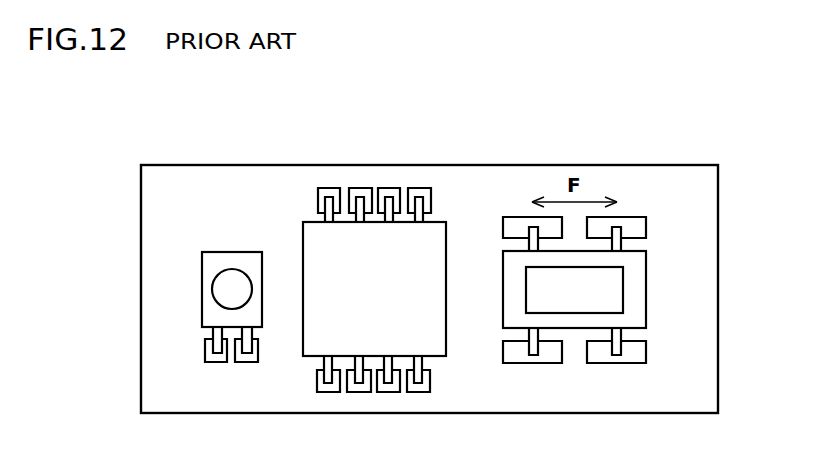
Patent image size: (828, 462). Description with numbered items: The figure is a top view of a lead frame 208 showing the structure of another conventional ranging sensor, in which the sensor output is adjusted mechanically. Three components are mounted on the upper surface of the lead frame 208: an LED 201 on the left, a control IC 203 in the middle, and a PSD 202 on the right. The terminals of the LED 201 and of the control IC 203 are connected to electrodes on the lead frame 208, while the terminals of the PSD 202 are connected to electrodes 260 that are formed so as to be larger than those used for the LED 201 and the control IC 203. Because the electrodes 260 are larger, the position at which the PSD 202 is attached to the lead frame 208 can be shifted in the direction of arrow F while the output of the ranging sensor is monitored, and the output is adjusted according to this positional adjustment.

The lead frame 208 is at (172, 211).
The LED 201 is at (232, 289).
The control IC 203 is at (327, 250).
The PSD 202 is at (633, 290).
The electrodes 260 is at (633, 228).